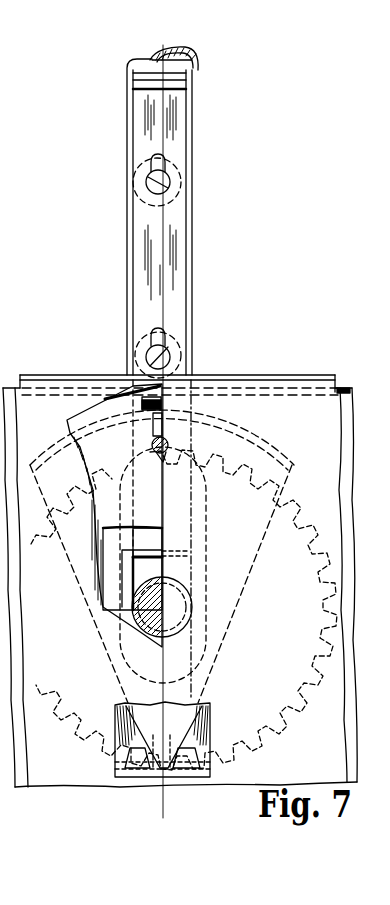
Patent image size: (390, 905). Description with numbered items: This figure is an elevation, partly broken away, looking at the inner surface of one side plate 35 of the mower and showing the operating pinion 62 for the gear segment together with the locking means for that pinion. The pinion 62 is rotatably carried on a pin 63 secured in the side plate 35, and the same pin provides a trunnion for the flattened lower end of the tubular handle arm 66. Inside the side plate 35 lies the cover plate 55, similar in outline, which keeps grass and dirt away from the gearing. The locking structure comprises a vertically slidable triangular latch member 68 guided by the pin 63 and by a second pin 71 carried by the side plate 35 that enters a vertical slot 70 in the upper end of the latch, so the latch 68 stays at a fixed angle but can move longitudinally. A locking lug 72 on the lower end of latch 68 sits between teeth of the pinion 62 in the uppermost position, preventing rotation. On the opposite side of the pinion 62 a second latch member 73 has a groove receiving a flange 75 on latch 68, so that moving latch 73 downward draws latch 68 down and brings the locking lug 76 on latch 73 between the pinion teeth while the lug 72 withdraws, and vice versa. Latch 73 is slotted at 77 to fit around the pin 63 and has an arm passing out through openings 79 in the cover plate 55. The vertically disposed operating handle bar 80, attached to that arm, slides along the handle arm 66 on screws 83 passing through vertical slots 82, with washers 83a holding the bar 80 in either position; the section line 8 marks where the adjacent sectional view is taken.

The section line 8- 8 is at (168, 69).
The side plate 35 is at (320, 412).
The cover plate 55 is at (345, 432).
The operating pinion 62 is at (287, 513).
The pin 63 is at (148, 637).
The handle arm 66 is at (130, 68).
The latch member 68 is at (283, 477).
The vertical slot 70 is at (153, 443).
The pin 71 is at (169, 442).
The locking lug 72 is at (116, 767).
The latch member 73 is at (197, 412).
The flange 75 is at (255, 427).
The locking lug 76 is at (148, 430).
The slot 77 is at (146, 563).
The openings 79 is at (208, 567).
The operating handle bar 80 is at (173, 235).
The vertical slots 82 is at (168, 157).
The screws 83 is at (172, 180).
The washers 83a is at (178, 198).